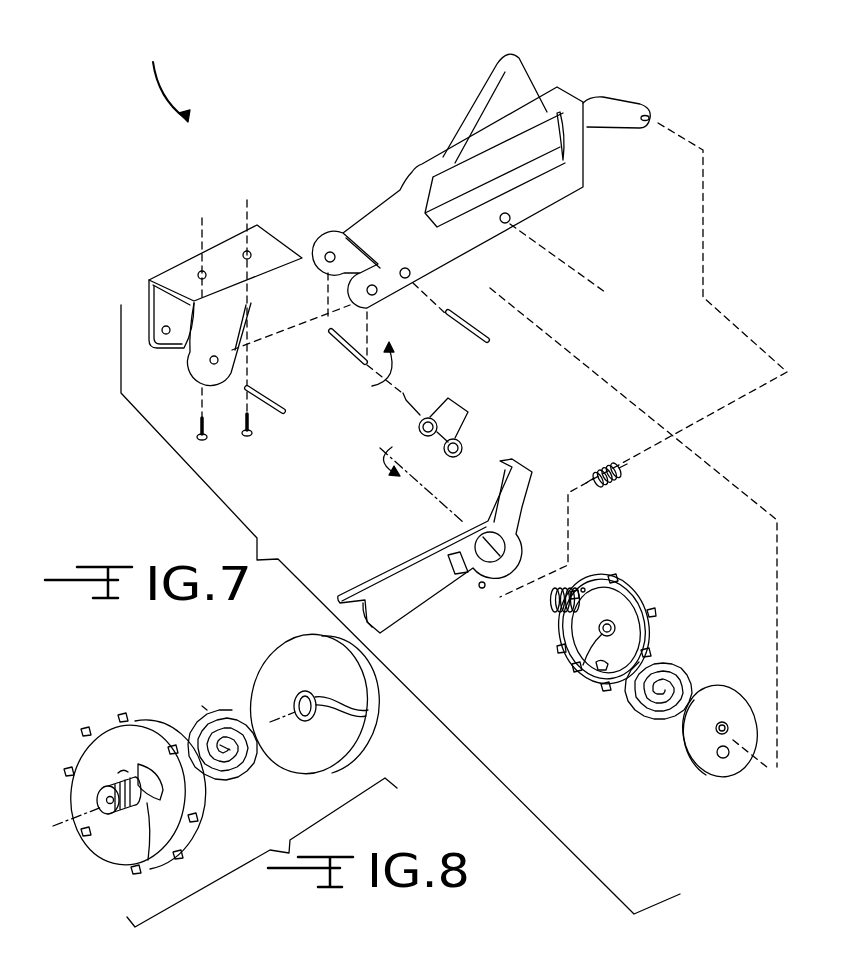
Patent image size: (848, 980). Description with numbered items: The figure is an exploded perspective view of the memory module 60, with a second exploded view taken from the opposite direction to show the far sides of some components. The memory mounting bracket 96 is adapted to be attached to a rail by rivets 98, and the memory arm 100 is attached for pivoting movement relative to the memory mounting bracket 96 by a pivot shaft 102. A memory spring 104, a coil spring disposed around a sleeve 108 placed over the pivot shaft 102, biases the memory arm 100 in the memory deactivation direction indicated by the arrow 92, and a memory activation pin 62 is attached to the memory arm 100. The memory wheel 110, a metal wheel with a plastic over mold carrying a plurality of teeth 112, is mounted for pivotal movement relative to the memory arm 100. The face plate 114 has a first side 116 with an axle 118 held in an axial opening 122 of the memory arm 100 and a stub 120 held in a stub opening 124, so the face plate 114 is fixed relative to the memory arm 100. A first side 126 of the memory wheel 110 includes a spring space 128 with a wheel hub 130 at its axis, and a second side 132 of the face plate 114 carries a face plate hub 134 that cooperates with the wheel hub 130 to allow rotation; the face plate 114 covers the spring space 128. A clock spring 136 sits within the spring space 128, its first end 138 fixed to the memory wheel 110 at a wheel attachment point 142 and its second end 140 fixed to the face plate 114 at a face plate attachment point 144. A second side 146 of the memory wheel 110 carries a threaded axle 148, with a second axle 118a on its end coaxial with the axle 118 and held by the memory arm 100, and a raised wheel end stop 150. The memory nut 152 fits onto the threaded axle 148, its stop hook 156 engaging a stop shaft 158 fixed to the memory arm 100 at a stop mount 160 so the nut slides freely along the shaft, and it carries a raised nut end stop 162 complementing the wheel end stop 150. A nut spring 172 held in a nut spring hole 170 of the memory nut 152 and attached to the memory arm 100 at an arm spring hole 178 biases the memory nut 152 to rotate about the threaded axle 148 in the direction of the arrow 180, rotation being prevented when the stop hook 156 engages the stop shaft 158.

In FIG. 7, the memory module 60 is at (162, 80).
In FIG. 7, the memory activation pin 62 is at (487, 97).
In FIG. 7, the arrow 92 is at (395, 364).
In FIG. 7, the memory mounting bracket 96 is at (167, 272).
In FIG. 7, the rivets 98 is at (210, 434).
In FIG. 7, the memory arm 100 is at (373, 214).
In FIG. 7, the pivot shaft 102 is at (283, 403).
In FIG. 7, the memory spring 104 is at (470, 407).
In FIG. 7, the sleeve 108 is at (335, 342).
In FIG. 7, the memory wheel 110 is at (587, 582).
In FIG. 8, the memory wheel 110 is at (92, 758).
In FIG. 7, the teeth 112 is at (650, 612).
In FIG. 8, the teeth 112 is at (135, 870).
In FIG. 7, the face plate 114 is at (727, 687).
In FIG. 7, the first side 116 is at (730, 705).
In FIG. 7, the axle 118 is at (730, 729).
In FIG. 8, the second axle 118a is at (104, 806).
In FIG. 7, the stub 120 is at (729, 754).
In FIG. 7, the axial opening 122 is at (510, 217).
In FIG. 7, the stub opening 124 is at (511, 230).
In FIG. 7, the first side 126 is at (582, 588).
In FIG. 7, the spring space 128 is at (607, 629).
In FIG. 7, the wheel hub 130 is at (575, 668).
In FIG. 8, the second side 132 is at (310, 704).
In FIG. 8, the face plate hub 134 is at (316, 704).
In FIG. 7, the clock spring 136 is at (642, 720).
In FIG. 8, the clock spring 136 is at (260, 772).
In FIG. 8, the first end 138 is at (202, 780).
In FIG. 8, the second end 140 is at (217, 740).
In FIG. 7, the wheel attachment point 142 is at (600, 668).
In FIG. 8, the face plate attachment point 144 is at (367, 712).
In FIG. 8, the second side 146 is at (100, 827).
In FIG. 7, the threaded axle 148 is at (551, 605).
In FIG. 8, the threaded axle 148 is at (118, 773).
In FIG. 8, the wheel end stop 150 is at (147, 803).
In FIG. 7, the memory nut 152 is at (405, 556).
In FIG. 7, the stop hook 156 is at (366, 618).
In FIG. 7, the stop shaft 158 is at (487, 332).
In FIG. 7, the stop mount 160 is at (412, 265).
In FIG. 7, the nut end stop 162 is at (447, 553).
In FIG. 7, the nut spring hole 170 is at (482, 589).
In FIG. 7, the nut spring 172 is at (621, 481).
In FIG. 7, the arm spring hole 178 is at (650, 110).
In FIG. 7, the arrow 180 is at (403, 484).